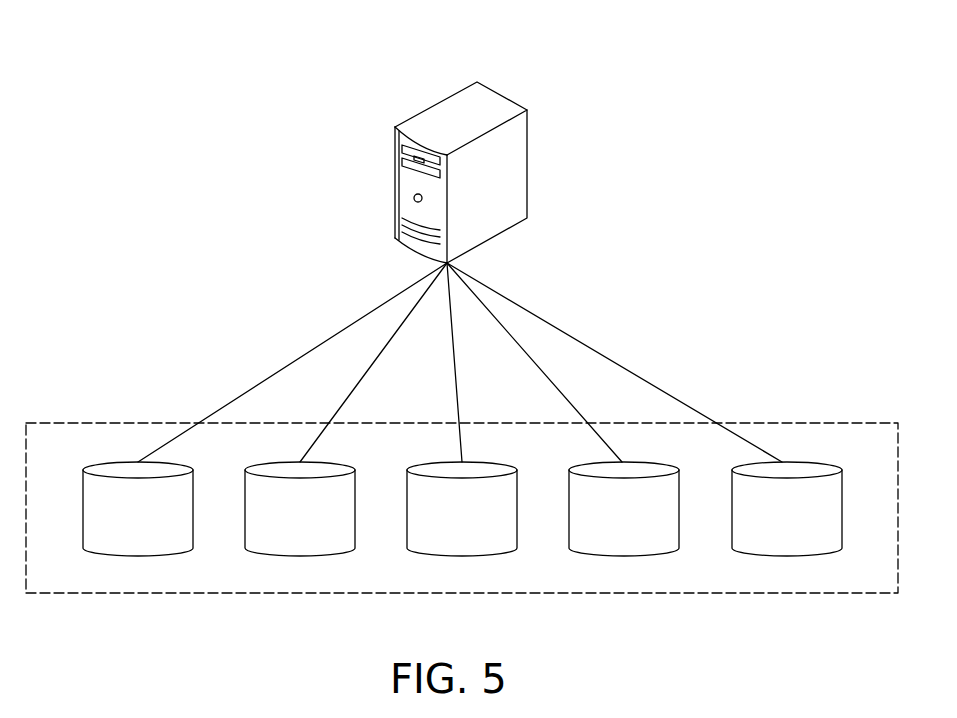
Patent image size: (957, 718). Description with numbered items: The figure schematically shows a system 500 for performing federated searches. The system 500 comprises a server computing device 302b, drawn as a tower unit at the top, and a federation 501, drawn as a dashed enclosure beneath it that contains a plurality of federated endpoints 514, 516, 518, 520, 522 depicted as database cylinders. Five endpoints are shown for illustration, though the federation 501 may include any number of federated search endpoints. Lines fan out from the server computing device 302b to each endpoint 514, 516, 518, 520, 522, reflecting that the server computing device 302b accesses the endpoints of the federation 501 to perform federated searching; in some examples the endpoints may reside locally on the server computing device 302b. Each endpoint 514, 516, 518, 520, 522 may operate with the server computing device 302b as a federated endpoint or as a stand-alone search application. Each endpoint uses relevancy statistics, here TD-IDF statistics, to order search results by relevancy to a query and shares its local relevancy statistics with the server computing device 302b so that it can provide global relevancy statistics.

The system 500 is at (142, 192).
The server computing device 302b is at (528, 121).
The federation 501 is at (857, 422).
The federated endpoint 514 is at (117, 526).
The federated endpoint 516 is at (279, 526).
The federated endpoint 518 is at (441, 526).
The federated endpoint 520 is at (603, 526).
The federated endpoint 522 is at (766, 526).